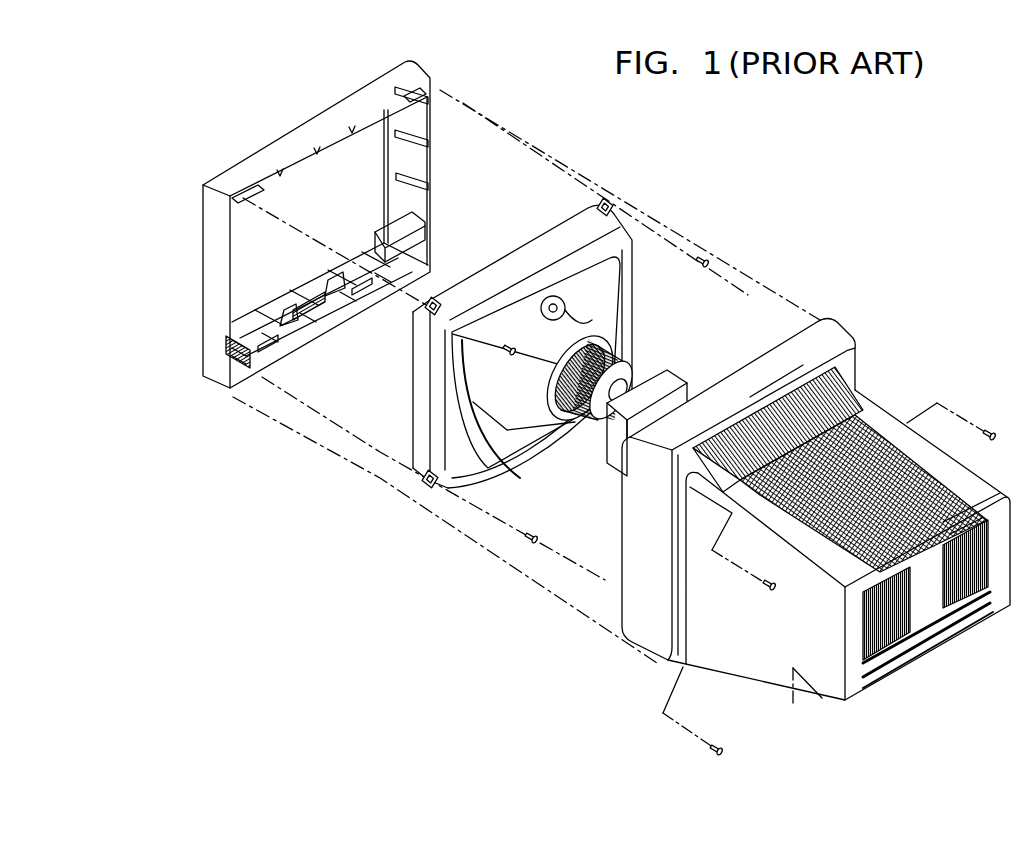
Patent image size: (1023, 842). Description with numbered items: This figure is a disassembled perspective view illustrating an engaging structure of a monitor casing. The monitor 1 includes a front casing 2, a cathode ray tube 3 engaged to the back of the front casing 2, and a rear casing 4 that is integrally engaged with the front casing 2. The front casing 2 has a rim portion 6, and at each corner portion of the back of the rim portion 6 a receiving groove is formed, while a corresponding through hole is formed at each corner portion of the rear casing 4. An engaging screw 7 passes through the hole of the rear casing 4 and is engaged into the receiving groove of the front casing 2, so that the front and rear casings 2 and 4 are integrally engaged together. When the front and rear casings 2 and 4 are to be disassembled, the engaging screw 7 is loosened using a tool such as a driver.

The monitor 1 is at (270, 104).
The front casing 2 is at (215, 367).
The cathode ray tube 3 is at (453, 479).
The rear casing 4 is at (765, 700).
The rim portion 6 is at (222, 393).
The engaging screw 7 is at (712, 752).